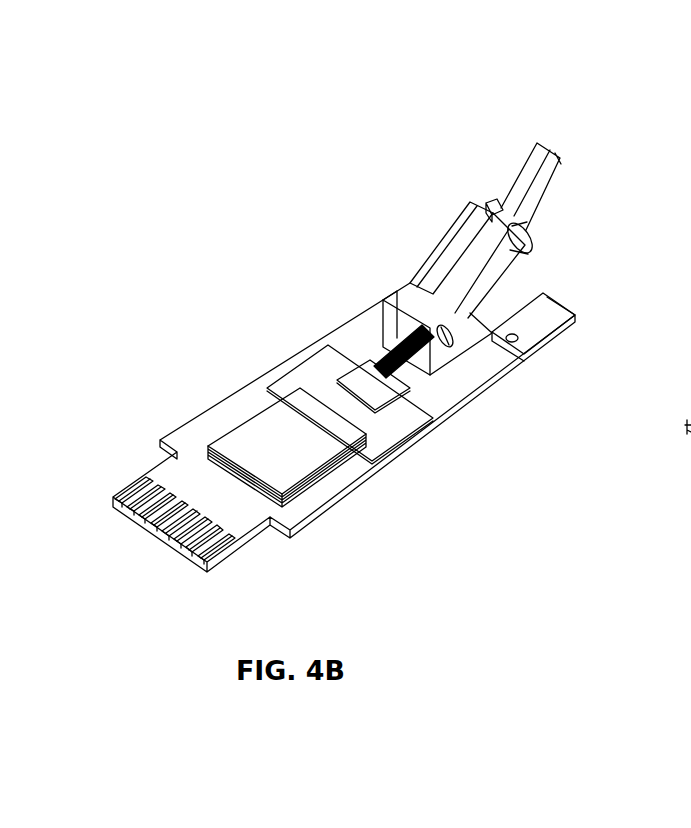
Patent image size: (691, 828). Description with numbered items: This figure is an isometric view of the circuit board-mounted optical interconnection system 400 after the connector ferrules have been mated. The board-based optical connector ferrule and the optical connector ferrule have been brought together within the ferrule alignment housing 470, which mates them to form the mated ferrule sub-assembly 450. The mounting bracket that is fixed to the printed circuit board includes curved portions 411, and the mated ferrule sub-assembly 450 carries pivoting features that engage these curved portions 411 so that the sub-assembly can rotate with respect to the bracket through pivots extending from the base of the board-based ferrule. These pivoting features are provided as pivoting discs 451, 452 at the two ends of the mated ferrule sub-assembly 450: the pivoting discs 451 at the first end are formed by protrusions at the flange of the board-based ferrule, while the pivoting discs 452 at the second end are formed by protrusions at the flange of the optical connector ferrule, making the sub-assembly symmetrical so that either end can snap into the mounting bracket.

The circuit board-mounted optical interconnection system 400 is at (280, 66).
The curved portions 411 is at (446, 371).
The mated ferrule sub-assembly 450 is at (421, 227).
The pivoting discs 451 is at (457, 357).
The pivoting discs 452 is at (536, 238).
The ferrule alignment housing 470 is at (490, 305).